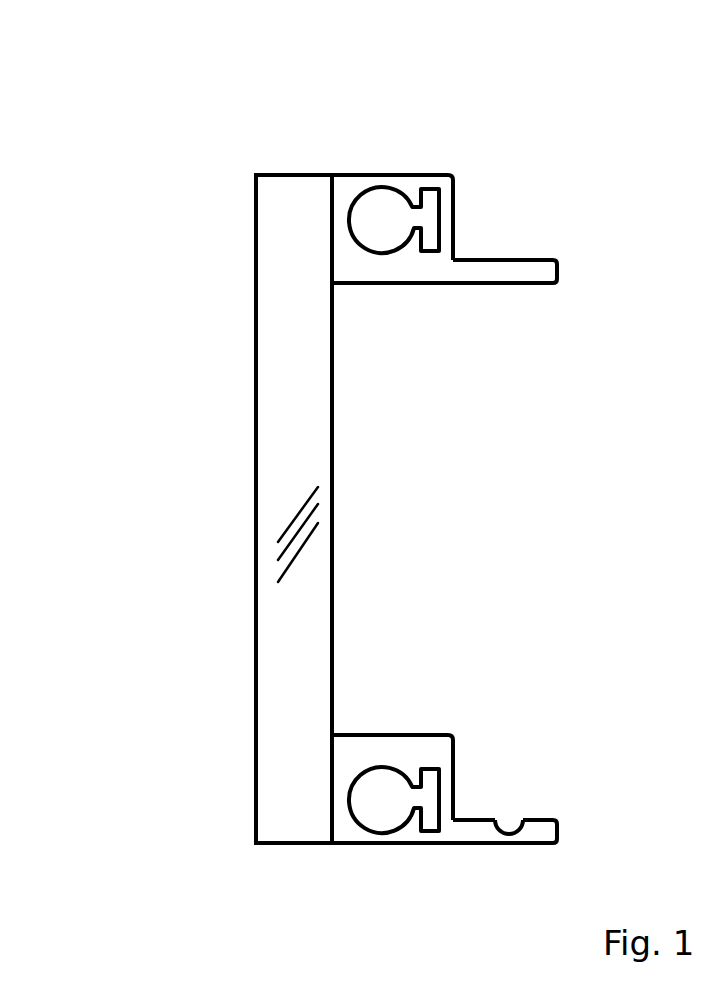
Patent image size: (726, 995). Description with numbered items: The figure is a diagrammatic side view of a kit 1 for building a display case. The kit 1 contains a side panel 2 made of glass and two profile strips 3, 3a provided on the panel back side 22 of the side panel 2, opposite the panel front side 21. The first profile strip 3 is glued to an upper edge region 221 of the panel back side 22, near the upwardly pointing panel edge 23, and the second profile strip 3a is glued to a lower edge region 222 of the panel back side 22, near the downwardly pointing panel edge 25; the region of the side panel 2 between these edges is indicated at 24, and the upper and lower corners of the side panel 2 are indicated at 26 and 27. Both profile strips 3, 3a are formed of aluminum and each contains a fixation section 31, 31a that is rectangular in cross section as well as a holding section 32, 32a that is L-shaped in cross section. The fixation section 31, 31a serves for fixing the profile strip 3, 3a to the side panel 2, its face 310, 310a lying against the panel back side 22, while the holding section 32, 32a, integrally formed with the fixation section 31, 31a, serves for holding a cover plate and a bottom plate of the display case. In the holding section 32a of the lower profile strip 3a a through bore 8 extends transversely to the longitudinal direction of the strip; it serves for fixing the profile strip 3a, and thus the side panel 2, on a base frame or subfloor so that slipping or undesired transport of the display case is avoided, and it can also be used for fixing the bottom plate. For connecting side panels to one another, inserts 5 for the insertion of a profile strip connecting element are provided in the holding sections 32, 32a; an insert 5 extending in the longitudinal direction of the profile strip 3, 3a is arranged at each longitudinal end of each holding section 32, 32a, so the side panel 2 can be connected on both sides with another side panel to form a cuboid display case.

The kit 1 is at (232, 148).
The side panel 2 is at (255, 423).
The panel front side 21 is at (255, 553).
The panel back side 22 is at (337, 400).
The panel edge 23 is at (295, 173).
The panel body 24 is at (310, 623).
The panel edge 25 is at (278, 847).
The upper corner of panel 26 is at (257, 175).
The lower corner of panel 27 is at (257, 841).
The upper edge region 221 is at (333, 245).
The lower edge region 222 is at (332, 775).
The first profile strip 3 is at (440, 175).
The second profile strip 3a is at (453, 778).
The fixation section 31 is at (340, 217).
The fixation section 31a is at (347, 755).
The holding section 32 is at (483, 268).
The holding section 32a is at (530, 832).
The contact face of upper leg 310 is at (332, 273).
The contact face of lower leg 310a is at (335, 817).
The insert 5 is at (387, 222).
The through bore 8 is at (505, 828).